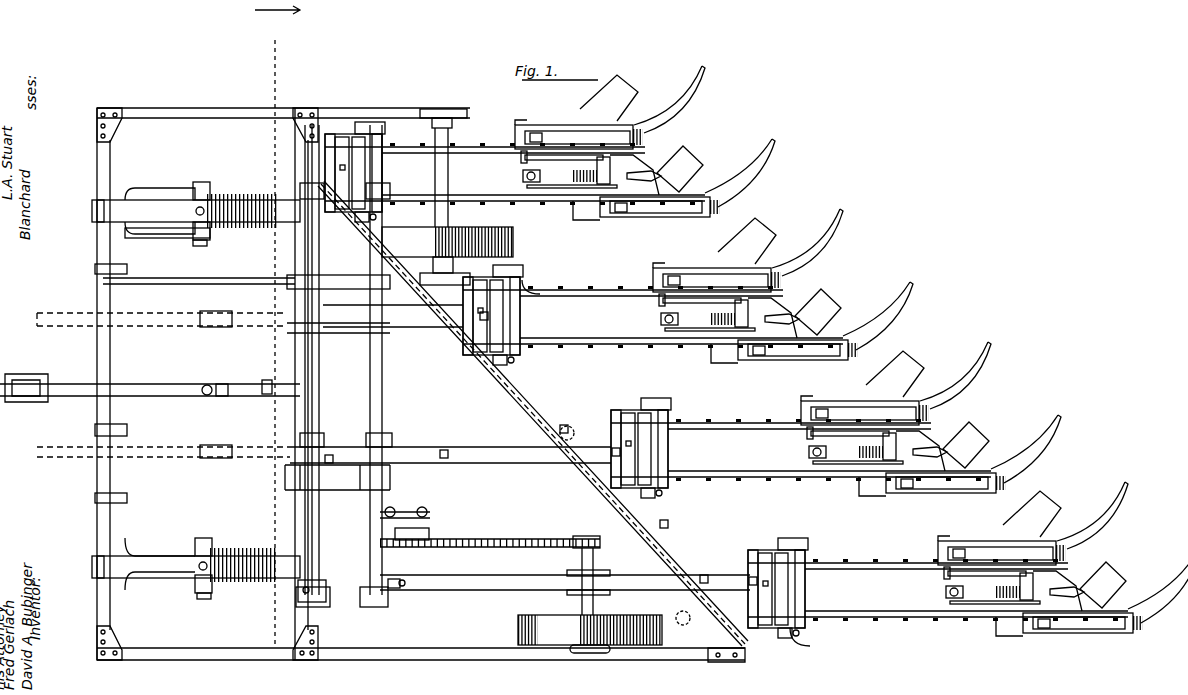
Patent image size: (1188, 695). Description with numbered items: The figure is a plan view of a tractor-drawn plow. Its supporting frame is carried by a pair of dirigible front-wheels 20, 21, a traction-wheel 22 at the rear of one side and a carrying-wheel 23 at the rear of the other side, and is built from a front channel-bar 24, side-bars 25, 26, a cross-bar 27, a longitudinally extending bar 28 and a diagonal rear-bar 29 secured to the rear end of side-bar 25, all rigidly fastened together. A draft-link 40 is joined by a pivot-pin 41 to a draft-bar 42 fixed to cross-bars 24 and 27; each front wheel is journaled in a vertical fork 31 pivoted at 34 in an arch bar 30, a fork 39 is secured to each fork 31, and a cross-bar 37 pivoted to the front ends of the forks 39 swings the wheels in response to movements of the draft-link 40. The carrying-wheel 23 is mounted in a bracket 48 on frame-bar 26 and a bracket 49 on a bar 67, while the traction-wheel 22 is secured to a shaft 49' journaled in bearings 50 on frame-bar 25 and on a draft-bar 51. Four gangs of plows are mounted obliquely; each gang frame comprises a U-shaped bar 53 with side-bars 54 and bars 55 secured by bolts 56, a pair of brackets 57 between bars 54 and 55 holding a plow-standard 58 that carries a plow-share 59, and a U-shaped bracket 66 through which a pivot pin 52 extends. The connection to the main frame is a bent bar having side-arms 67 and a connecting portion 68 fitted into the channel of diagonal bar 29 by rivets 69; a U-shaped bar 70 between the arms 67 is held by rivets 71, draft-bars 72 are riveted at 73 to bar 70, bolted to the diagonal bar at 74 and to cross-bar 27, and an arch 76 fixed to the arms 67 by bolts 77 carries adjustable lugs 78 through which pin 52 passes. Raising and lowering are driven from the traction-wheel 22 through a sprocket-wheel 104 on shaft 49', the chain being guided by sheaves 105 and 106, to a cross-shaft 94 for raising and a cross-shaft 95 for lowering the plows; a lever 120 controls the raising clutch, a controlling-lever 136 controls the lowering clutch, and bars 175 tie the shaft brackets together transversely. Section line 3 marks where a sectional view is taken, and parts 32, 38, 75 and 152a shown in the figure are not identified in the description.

The section line 3 is at (277, 340).
The dirigible front-wheel 20 is at (240, 196).
The dirigible front-wheel 21 is at (250, 556).
The traction-wheel 22 is at (518, 622).
The carrying-wheel 23 is at (515, 242).
The front channel-bar 24 is at (98, 400).
The side-bar 25 is at (222, 644).
The side-bar 26 is at (242, 117).
The cross-bar 27 is at (295, 420).
The longitudinally extending bar 28 is at (225, 284).
The diagonal rear-bar 29 is at (462, 372).
The arch bar 30 is at (163, 224).
The vertical fork 31 is at (186, 618).
The bolt block 32 is at (205, 182).
The pivot 34 is at (215, 236).
The cross-bar 37 is at (128, 269).
The end bracket 38 is at (97, 205).
The fork 39 is at (160, 388).
The draft-link 40 is at (178, 388).
The pivot-pin 41 is at (205, 386).
The draft-bar 42 is at (163, 388).
The bracket 48 is at (470, 114).
The bracket 49 is at (451, 271).
The shaft 49' is at (613, 581).
The bearings 50 is at (490, 640).
The draft-bar 51 is at (508, 575).
The pin 52 is at (400, 135).
The U-shaped bar 53 is at (726, 380).
The side-bar 54 is at (755, 366).
The bar 55 is at (824, 378).
The bolts 56 is at (847, 397).
The brackets 57 is at (816, 361).
The plow-standard 58 is at (825, 374).
The plow-share 59 is at (911, 343).
The U-shaped bracket 66 is at (687, 459).
The side-arms 67 is at (328, 134).
The connecting portion 68 is at (625, 525).
The rivets 69 is at (556, 464).
The U-shaped bar 70 is at (541, 381).
The rivets 71 is at (588, 381).
The draft-bars 72 is at (414, 328).
The rivet 73 is at (554, 384).
The bolt connection 74 is at (640, 516).
The cap 75 is at (581, 336).
The arch 76 is at (564, 371).
The bolts 77 is at (573, 433).
The lugs 78 is at (598, 428).
The cross-shaft 94 is at (320, 384).
The cross-shaft 95 is at (384, 390).
The sprocket-wheel 104 is at (583, 530).
The sheave 105 is at (490, 533).
The sheave 106 is at (390, 534).
The lever 120 is at (296, 588).
The controlling-lever 136 is at (380, 512).
The plate 152a is at (897, 368).
The bars 175 is at (398, 484).